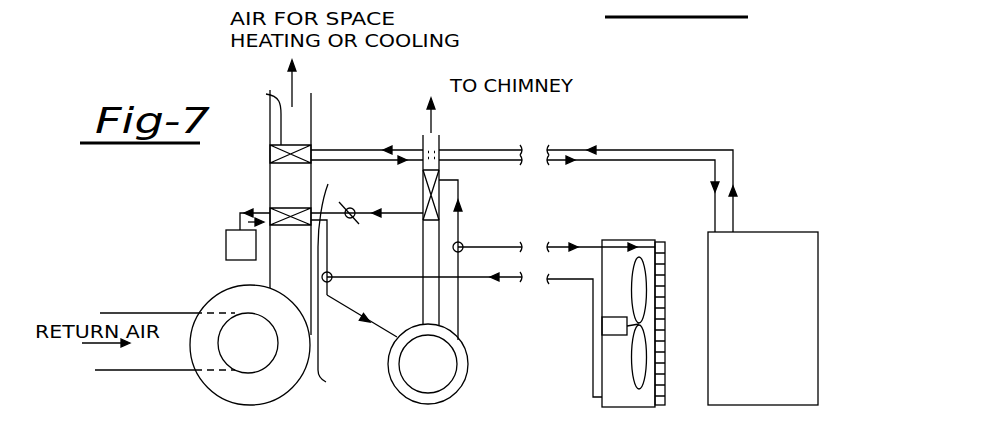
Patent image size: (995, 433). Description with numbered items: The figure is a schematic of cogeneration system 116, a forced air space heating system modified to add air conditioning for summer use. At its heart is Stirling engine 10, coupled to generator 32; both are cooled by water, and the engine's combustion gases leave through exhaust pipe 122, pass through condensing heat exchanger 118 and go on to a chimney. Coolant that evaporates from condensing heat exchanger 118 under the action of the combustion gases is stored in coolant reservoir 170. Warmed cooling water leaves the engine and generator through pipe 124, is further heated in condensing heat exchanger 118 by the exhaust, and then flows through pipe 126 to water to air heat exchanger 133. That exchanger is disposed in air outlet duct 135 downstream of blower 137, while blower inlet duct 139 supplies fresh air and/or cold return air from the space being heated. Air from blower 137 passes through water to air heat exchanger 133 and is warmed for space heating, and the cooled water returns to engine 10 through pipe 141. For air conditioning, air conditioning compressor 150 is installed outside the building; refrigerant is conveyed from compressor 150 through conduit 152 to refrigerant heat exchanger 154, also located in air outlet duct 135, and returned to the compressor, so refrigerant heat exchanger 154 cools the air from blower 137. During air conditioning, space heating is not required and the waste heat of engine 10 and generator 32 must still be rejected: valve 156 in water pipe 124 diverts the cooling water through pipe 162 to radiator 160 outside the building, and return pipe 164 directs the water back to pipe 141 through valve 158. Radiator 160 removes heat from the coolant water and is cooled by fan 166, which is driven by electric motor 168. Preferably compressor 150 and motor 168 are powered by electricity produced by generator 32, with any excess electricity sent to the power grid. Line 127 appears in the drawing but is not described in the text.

The Stirling engine 10 is at (468, 352).
The generator 32 is at (452, 384).
The cogeneration system 116 is at (381, 134).
The condensing heat exchanger 118 is at (423, 197).
The exhaust pipe 122 is at (421, 247).
The pipe 124 is at (460, 191).
The pipe 126 is at (367, 195).
The conduit 127 is at (337, 290).
The water to air heat exchanger 133 is at (290, 210).
The air outlet duct 135 is at (270, 180).
The blower 137 is at (210, 292).
The blower inlet duct 139 is at (133, 313).
The pipe 141 is at (349, 313).
The air conditioning compressor 150 is at (775, 232).
The conduit 152 is at (665, 151).
The refrigerant heat exchanger 154 is at (268, 95).
The valve 156 is at (464, 242).
The valve 158 is at (332, 272).
The radiator 160 is at (668, 250).
The pipe 162 is at (552, 247).
The return pipe 164 is at (574, 281).
The fan 166 is at (648, 295).
The electric motor 168 is at (612, 336).
The coolant reservoir 170 is at (226, 246).